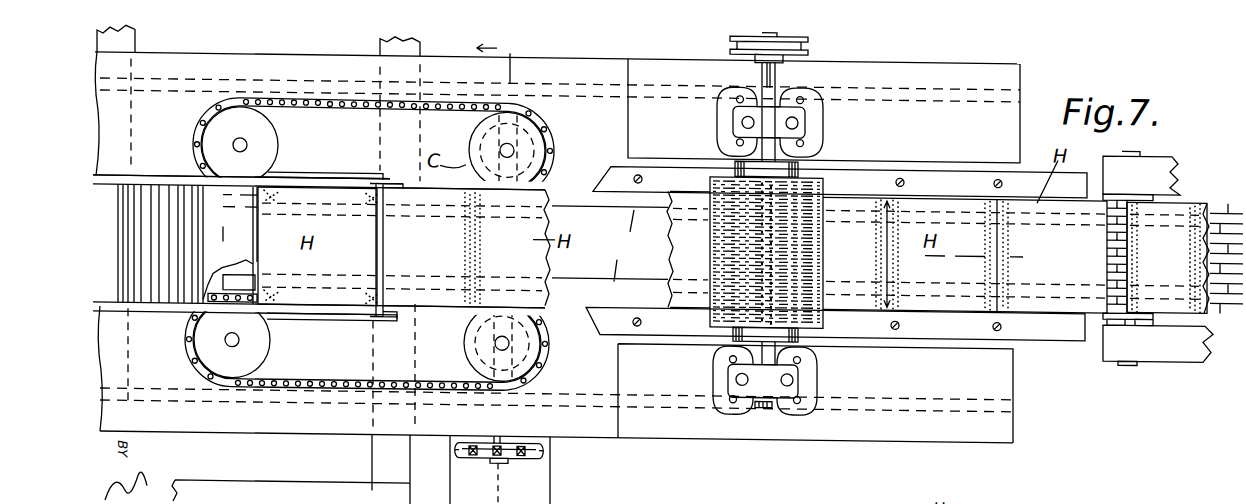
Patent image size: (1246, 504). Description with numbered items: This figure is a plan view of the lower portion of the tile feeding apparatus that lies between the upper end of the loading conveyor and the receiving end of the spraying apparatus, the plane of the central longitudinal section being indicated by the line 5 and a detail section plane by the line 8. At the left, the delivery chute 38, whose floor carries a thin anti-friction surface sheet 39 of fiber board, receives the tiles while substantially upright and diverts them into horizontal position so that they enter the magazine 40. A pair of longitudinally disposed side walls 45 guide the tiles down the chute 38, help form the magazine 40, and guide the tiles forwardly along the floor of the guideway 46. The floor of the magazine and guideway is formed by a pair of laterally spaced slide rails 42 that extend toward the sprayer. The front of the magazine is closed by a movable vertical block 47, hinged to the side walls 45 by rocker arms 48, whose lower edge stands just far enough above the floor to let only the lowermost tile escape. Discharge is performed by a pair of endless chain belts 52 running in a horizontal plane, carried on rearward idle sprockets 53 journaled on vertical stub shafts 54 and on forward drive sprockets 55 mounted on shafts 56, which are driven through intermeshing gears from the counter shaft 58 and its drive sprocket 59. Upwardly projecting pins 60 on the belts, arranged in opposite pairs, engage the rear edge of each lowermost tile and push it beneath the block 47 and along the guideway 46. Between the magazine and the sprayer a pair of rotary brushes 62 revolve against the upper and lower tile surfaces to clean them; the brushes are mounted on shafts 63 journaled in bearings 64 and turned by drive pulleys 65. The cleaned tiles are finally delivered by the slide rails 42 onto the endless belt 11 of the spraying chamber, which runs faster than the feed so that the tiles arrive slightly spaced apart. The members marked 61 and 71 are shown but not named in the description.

The section line 5— 5 is at (115, 240).
The section line 8— 8 is at (494, 52).
The endless belt 11 is at (1192, 196).
The delivery chute 38 is at (120, 275).
The curved surface sheet 39 is at (183, 286).
The magazine 40 is at (297, 181).
The slide rails 42 is at (610, 244).
The side walls 45 is at (332, 177).
The guideway 46 is at (696, 308).
The movable vertical block 47 is at (377, 238).
The rocker arms 48 is at (362, 170).
The endless chain belts 52 is at (457, 102).
The rearward idle sprockets 53 is at (206, 131).
The vertical stub shafts 54 is at (243, 143).
The forward drive sprockets 55 is at (540, 131).
The shafts 56 is at (515, 145).
The counter shaft 58 is at (492, 462).
The drive sprocket 59 is at (525, 452).
The pins 60 is at (487, 98).
The side beam 61 is at (922, 166).
The rotary brushes 62 is at (823, 239).
The shafts 63 is at (762, 396).
The bearings 64 is at (783, 106).
The drive pulleys 65 is at (800, 43).
The bearing block 71 is at (825, 173).